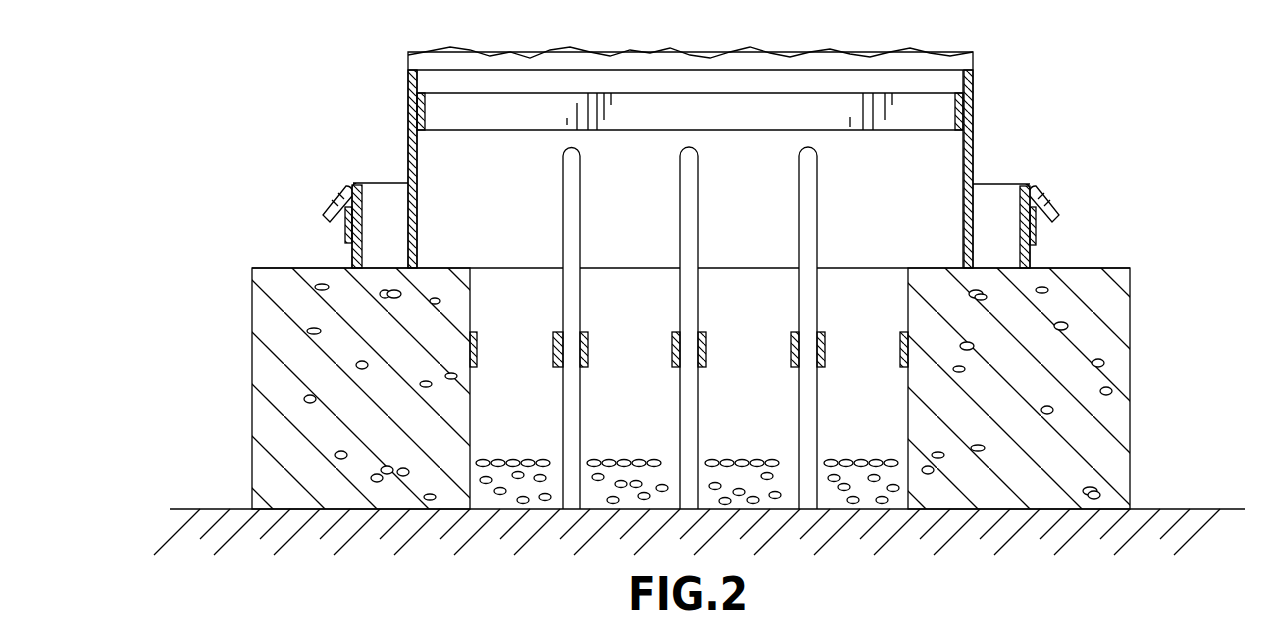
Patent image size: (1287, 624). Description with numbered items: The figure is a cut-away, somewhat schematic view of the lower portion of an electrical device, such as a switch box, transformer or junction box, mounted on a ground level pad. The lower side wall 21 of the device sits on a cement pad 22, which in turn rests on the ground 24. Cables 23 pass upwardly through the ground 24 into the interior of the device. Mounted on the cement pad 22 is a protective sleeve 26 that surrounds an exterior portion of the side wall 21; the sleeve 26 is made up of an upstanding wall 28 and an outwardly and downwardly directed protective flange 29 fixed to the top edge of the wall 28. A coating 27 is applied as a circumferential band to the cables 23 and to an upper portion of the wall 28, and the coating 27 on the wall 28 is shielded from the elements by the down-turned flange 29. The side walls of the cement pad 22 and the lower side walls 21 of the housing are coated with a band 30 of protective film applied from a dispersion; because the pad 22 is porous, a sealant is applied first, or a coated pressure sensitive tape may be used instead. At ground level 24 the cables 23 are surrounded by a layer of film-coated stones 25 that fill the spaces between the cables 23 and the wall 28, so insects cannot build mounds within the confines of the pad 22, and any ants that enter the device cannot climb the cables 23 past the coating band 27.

The lower side wall 21 is at (394, 94).
The cement pad 22 is at (252, 315).
The cables 23 is at (583, 226).
The ground 24 is at (1186, 508).
The stones 25 is at (518, 460).
The protective sleeve 26 is at (1104, 208).
The coating 27 is at (345, 232).
The upstanding wall 28 is at (364, 205).
The protective flange 29 is at (340, 196).
The band 30 is at (484, 132).